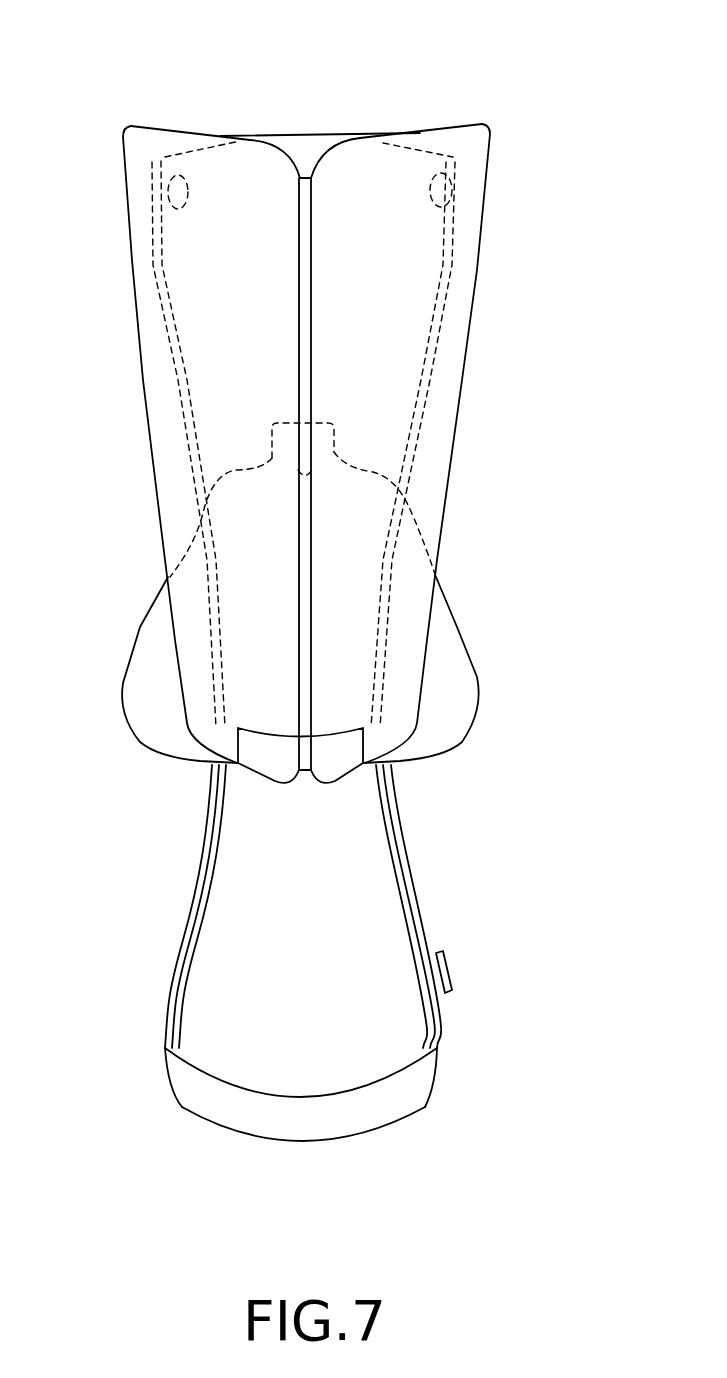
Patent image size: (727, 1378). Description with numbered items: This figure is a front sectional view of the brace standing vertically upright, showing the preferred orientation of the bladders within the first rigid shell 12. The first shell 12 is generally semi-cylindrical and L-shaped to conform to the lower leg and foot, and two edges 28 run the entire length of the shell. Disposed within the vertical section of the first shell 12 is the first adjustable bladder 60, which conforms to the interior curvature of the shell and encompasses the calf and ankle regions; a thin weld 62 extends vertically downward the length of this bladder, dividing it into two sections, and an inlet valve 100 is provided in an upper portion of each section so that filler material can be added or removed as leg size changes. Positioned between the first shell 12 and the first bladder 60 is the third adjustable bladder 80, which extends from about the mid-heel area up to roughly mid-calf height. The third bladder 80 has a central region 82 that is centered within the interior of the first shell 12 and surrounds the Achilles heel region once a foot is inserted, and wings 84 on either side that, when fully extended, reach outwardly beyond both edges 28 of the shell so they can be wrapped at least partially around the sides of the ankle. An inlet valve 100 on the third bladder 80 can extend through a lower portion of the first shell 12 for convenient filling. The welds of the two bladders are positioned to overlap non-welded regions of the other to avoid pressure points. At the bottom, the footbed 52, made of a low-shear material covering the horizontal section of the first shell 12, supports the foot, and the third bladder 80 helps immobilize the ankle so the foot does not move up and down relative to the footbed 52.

The first rigid shell 12 is at (313, 971).
The edges of the first shell 28 is at (423, 937).
The footbed 52 is at (373, 1057).
The first adjustable bladder 60 is at (143, 137).
The weld 62 is at (308, 178).
The third adjustable bladder 80 is at (309, 668).
The central region of the third bladder 82 is at (373, 508).
The wings of the third bladder 84 is at (142, 700).
The inlet valve 100 is at (170, 190).